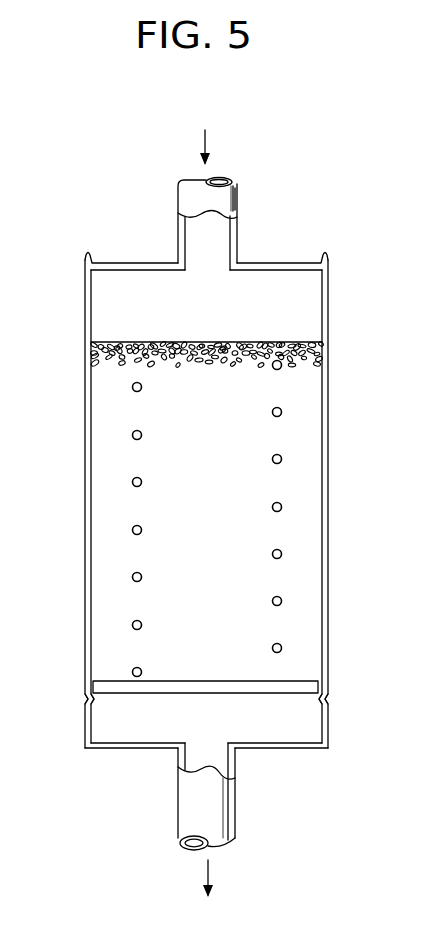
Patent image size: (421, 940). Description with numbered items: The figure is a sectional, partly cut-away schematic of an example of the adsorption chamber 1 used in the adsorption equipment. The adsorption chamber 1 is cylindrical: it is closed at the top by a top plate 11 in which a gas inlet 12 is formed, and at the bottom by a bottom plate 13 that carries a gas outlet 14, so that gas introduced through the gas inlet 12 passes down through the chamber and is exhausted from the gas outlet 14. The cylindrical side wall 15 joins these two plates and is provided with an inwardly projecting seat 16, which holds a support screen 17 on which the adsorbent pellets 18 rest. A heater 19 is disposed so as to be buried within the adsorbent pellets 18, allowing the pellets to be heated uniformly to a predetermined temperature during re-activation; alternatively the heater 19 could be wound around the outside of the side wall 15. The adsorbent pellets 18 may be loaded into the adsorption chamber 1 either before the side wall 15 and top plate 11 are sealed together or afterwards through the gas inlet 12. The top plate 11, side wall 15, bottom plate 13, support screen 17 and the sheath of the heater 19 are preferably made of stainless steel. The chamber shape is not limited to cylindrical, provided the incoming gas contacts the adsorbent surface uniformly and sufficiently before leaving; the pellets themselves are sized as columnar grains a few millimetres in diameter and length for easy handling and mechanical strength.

The adsorption chamber 1 is at (74, 464).
The top plate 11 is at (293, 265).
The gas inlet 12 is at (212, 265).
The bottom plate 13 is at (289, 749).
The gas outlet 14 is at (211, 745).
The cylindrical side wall 15 is at (327, 303).
The inwardly projecting seat 16 is at (327, 700).
The support screen 17 is at (309, 688).
The adsorbent pellets 18 is at (305, 365).
The heater 19 is at (282, 414).